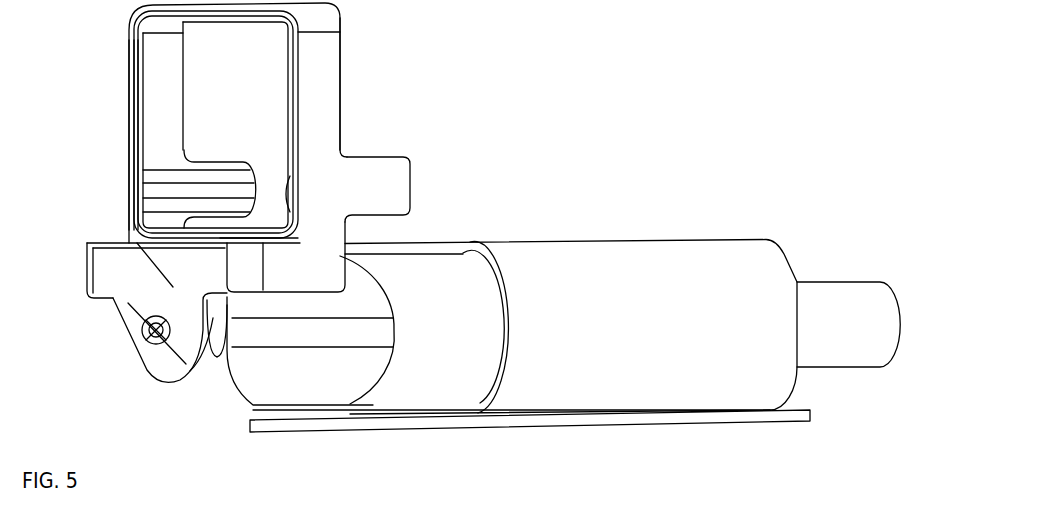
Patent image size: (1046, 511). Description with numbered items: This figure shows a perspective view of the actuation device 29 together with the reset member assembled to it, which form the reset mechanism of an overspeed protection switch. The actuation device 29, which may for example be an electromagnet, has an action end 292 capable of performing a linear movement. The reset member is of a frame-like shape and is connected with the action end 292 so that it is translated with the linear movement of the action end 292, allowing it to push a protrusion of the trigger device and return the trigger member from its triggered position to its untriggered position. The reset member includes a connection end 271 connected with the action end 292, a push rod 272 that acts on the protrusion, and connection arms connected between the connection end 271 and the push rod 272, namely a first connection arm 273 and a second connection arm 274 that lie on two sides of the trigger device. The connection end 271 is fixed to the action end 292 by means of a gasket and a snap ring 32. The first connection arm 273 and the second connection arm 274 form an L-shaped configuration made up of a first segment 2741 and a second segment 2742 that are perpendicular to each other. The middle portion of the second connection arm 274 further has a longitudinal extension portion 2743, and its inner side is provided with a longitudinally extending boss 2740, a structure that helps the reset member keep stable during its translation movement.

The actuation device 29 is at (451, 284).
The snap ring 32 is at (158, 320).
The connection end 271 is at (133, 240).
The push rod 272 is at (206, 22).
The first connection arm 273 is at (153, 153).
The second connection arm 274 is at (320, 137).
The action end 292 is at (140, 330).
The longitudinally extending boss 2740 is at (288, 178).
The first segment 2741 is at (293, 267).
The second segment 2742 is at (317, 103).
The longitudinal extension portion 2743 is at (377, 183).